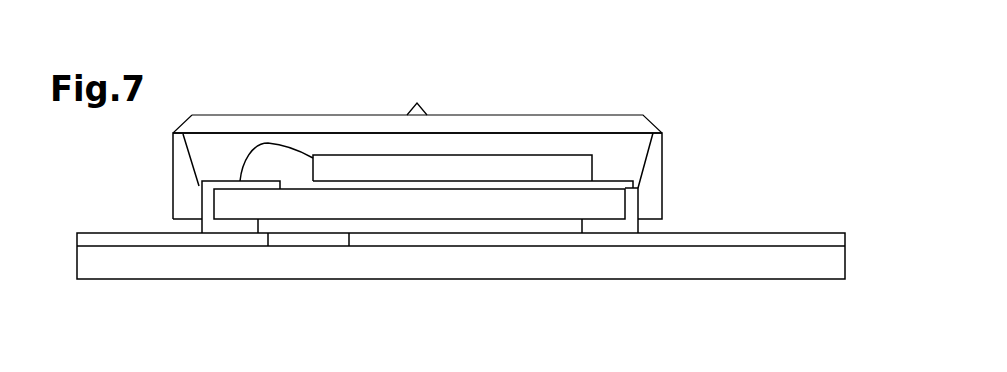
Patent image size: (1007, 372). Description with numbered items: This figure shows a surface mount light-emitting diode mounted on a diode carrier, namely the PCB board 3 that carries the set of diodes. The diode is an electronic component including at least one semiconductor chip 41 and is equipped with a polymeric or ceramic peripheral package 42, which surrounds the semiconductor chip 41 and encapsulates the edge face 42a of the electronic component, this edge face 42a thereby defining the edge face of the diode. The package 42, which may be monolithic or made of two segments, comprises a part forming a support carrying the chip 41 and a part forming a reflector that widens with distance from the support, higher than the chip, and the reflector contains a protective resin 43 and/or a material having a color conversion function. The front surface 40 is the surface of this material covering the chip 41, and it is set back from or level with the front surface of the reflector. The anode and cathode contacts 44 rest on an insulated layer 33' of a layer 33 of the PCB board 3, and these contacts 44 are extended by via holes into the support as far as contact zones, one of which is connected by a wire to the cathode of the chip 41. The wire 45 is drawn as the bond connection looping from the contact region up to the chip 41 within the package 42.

The PCB board 3 is at (493, 113).
The layer 33 is at (461, 215).
The insulated layer 33' is at (308, 288).
The front surface 40 is at (417, 103).
The semiconductor chip 41 is at (450, 168).
The peripheral package 42 is at (182, 180).
The edge face 42a is at (660, 168).
The protective resin 43 is at (615, 157).
The anode and cathode contacts 44 is at (238, 233).
The bond wire 45 is at (225, 181).